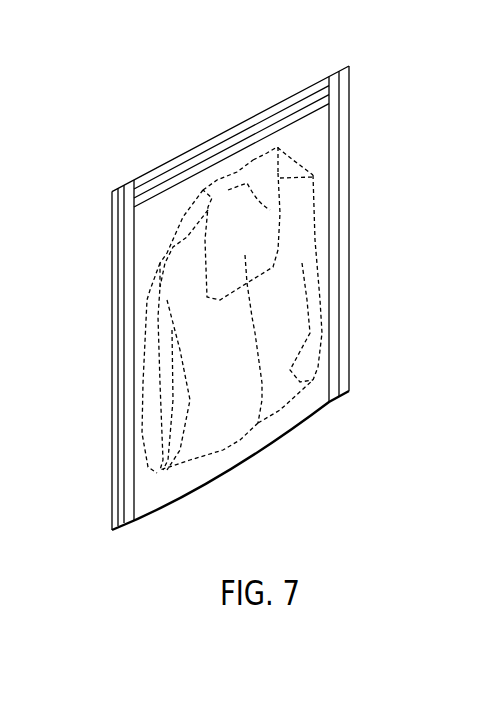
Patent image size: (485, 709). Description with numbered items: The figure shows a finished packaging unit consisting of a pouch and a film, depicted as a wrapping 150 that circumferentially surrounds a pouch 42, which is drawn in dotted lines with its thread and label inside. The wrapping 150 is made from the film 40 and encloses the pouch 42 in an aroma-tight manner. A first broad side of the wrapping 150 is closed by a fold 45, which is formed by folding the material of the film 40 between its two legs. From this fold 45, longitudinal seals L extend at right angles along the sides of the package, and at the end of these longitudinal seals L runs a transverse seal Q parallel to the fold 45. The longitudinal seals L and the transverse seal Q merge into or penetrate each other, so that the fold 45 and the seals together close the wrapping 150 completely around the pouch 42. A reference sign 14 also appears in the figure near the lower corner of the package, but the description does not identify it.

The wrapping 150 is at (347, 64).
The front panel 14 is at (332, 403).
The film 40 is at (140, 227).
The pouch 42 is at (158, 473).
The fold 45 is at (226, 477).
The transverse seal Q is at (284, 101).
The longitudinal seals L is at (351, 208).